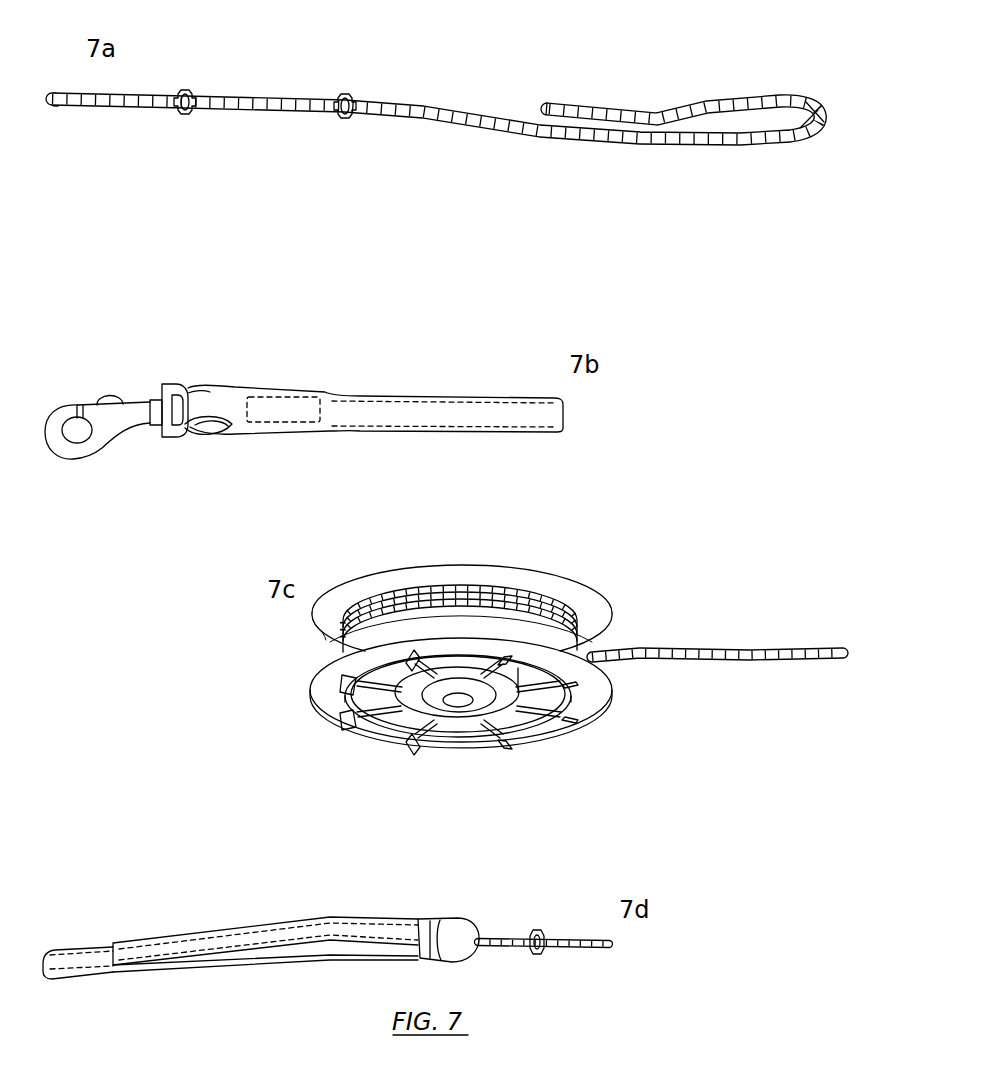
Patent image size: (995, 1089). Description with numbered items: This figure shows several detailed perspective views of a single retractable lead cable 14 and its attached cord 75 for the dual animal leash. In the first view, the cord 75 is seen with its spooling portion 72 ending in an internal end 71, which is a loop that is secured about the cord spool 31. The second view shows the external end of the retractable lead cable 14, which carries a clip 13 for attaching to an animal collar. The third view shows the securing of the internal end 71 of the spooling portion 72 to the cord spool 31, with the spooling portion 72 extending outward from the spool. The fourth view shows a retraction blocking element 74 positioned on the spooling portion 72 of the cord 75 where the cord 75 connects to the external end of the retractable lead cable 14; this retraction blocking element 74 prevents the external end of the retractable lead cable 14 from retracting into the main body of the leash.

The clip 13 is at (100, 449).
The retractable lead cable 14 is at (403, 406).
The cord spool 31 is at (400, 742).
The internal end 71 is at (718, 100).
The spooling portion 72 is at (243, 99).
The retraction blocking element 74 is at (450, 937).
The cord 75 is at (316, 205).